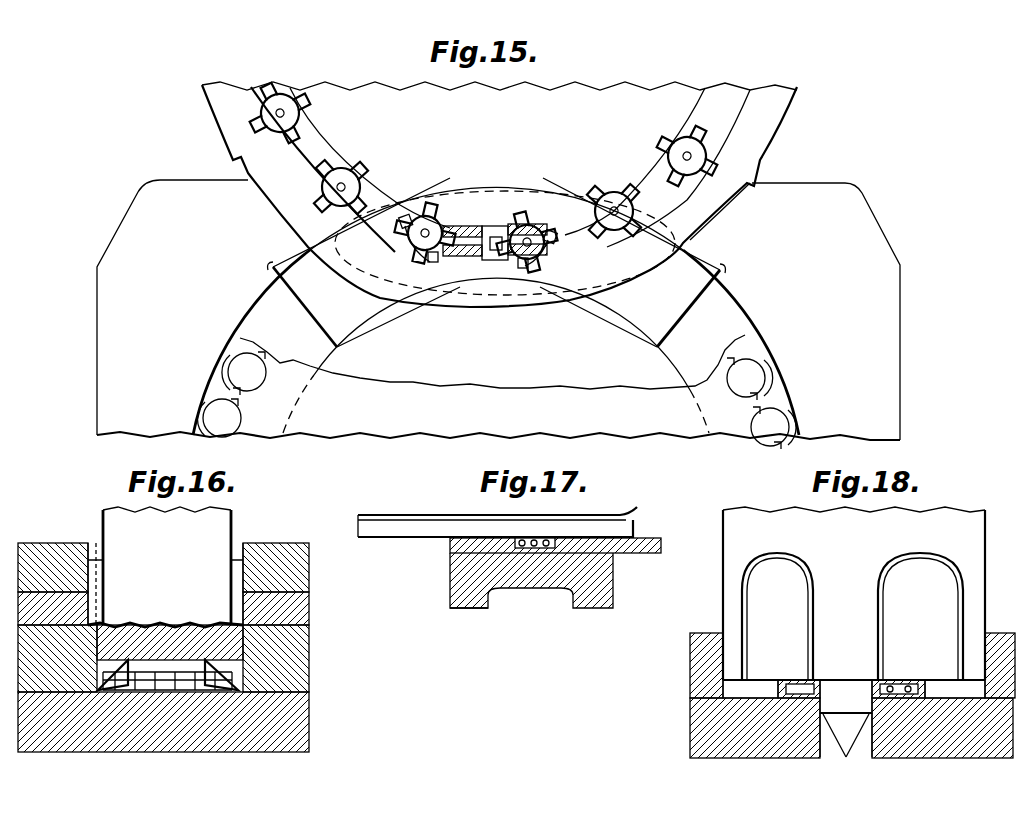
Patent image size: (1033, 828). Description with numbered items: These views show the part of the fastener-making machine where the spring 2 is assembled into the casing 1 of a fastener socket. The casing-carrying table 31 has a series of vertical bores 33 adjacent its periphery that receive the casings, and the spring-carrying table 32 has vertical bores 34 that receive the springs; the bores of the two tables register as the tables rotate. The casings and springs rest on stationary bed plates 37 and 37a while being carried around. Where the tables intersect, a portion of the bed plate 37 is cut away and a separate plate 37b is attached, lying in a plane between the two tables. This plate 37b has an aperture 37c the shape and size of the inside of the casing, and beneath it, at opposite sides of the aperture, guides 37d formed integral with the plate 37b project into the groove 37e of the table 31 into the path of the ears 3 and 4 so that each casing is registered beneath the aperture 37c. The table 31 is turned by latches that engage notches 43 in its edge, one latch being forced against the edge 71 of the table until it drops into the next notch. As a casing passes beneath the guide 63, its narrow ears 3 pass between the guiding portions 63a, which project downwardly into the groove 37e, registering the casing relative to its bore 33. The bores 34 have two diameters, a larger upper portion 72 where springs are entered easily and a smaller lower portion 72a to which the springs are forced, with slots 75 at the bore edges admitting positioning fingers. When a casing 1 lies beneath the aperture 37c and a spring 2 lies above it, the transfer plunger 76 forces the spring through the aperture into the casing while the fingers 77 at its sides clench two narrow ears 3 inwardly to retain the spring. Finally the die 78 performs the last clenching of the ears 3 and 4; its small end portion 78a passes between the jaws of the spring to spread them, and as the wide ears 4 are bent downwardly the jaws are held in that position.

In FIG. 15, the casing 1 is at (522, 228).
In FIG. 16, the casing 1 is at (118, 693).
In FIG. 18, the casing 1 is at (814, 690).
In FIG. 16, the spring 2 is at (162, 687).
In FIG. 18, the spring 2 is at (885, 687).
In FIG. 15, the narrow portions or ears 3 is at (556, 238).
In FIG. 16, the narrow portions or ears 3 is at (218, 662).
In FIG. 15, the wide portions or ears 4 is at (520, 266).
In FIG. 18, the wide portions or ears 4 is at (912, 680).
In FIG. 15, the casing-carrying table 31 is at (780, 108).
In FIG. 16, the casing-carrying table 31 is at (309, 656).
In FIG. 17, the casing-carrying table 31 is at (638, 557).
In FIG. 18, the casing-carrying table 31 is at (690, 672).
In FIG. 15, the spring-carrying table 32 is at (780, 387).
In FIG. 16, the spring-carrying table 32 is at (307, 571).
In FIG. 15, the vertical bores 33 is at (700, 156).
In FIG. 18, the vertical bores 33 is at (958, 692).
In FIG. 15, the vertical bores 34 is at (212, 415).
In FIG. 15, the bed plate 37 is at (885, 408).
In FIG. 16, the bed plate 37 is at (302, 722).
In FIG. 17, the bed plate 37a is at (527, 575).
In FIG. 18, the bed plate 37a is at (727, 723).
In FIG. 15, the plate 37b is at (285, 256).
In FIG. 16, the plate 37b is at (295, 610).
In FIG. 15, the aperture 37c is at (485, 255).
In FIG. 15, the guides 37d is at (553, 250).
In FIG. 15, the groove 37e is at (327, 141).
In FIG. 17, the groove 37e is at (477, 575).
In FIG. 15, the notches 43 is at (757, 181).
In FIG. 17, the guide 63 is at (417, 527).
In FIG. 17, the guiding portions 63a is at (548, 538).
In FIG. 15, the edge 71 is at (727, 214).
In FIG. 15, the upper portion 72 is at (230, 374).
In FIG. 15, the lower portion 72a is at (240, 352).
In FIG. 16, the slots 75 is at (93, 543).
In FIG. 16, the transfer plunger 76 is at (217, 523).
In FIG. 16, the fingers 77 is at (92, 588).
In FIG. 18, the die 78 is at (962, 526).
In FIG. 18, the small end portion 78a is at (843, 716).